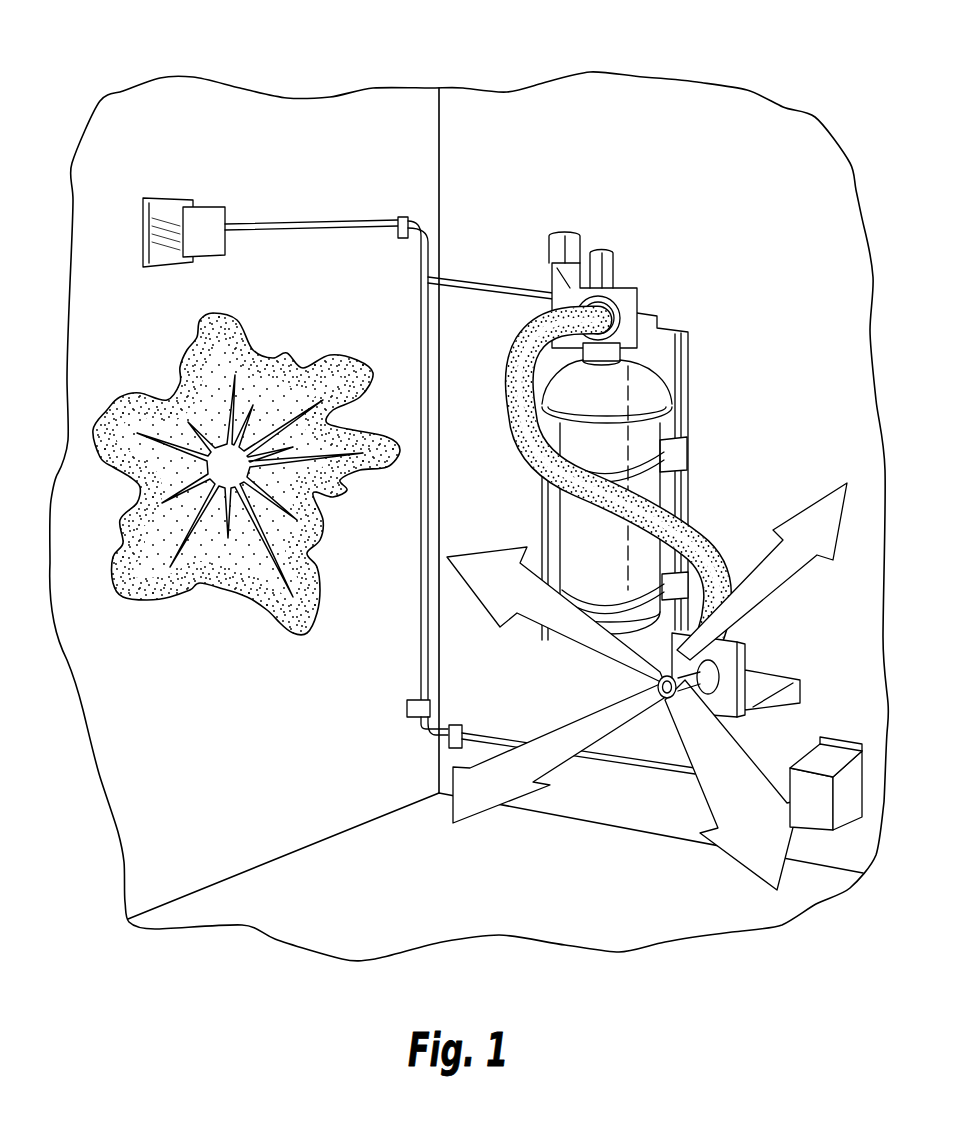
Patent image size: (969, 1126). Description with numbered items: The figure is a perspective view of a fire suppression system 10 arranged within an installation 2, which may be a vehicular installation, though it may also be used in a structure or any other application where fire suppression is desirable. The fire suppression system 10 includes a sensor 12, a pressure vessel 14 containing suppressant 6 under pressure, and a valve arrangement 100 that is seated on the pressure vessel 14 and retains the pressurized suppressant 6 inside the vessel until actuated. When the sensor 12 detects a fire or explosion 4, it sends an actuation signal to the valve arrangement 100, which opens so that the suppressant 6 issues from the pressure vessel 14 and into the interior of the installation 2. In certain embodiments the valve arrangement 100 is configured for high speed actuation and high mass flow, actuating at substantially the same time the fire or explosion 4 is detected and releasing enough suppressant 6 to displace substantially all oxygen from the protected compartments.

The installation 2 is at (325, 753).
The fire or explosion 4 is at (190, 607).
The suppressant 6 is at (757, 548).
The fire suppression system 10 is at (491, 155).
The sensor 12 is at (228, 207).
The pressure vessel 14 is at (541, 513).
The valve arrangement 100 is at (645, 447).